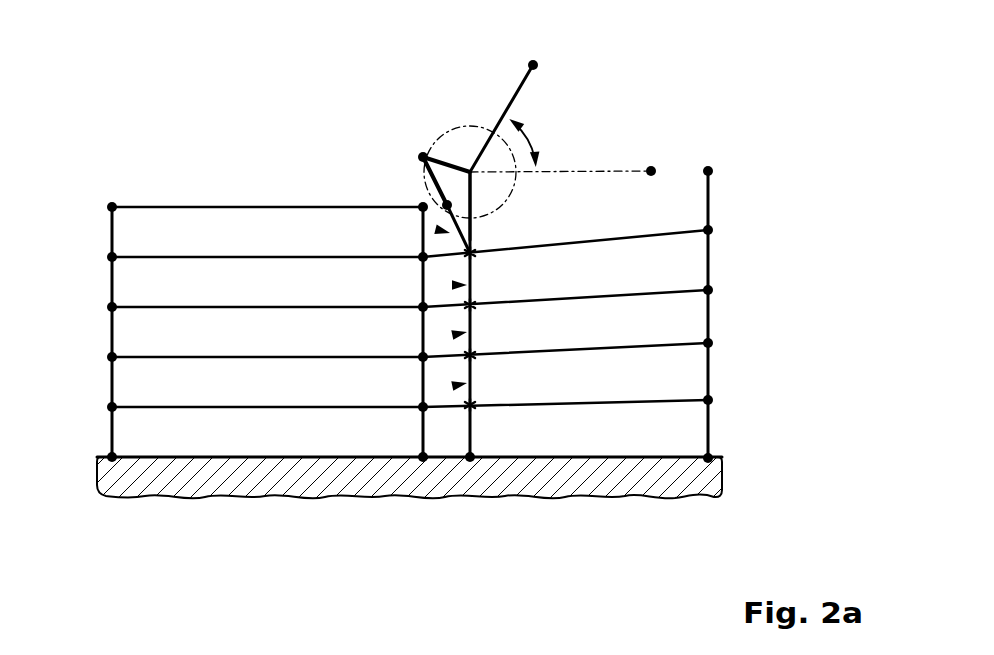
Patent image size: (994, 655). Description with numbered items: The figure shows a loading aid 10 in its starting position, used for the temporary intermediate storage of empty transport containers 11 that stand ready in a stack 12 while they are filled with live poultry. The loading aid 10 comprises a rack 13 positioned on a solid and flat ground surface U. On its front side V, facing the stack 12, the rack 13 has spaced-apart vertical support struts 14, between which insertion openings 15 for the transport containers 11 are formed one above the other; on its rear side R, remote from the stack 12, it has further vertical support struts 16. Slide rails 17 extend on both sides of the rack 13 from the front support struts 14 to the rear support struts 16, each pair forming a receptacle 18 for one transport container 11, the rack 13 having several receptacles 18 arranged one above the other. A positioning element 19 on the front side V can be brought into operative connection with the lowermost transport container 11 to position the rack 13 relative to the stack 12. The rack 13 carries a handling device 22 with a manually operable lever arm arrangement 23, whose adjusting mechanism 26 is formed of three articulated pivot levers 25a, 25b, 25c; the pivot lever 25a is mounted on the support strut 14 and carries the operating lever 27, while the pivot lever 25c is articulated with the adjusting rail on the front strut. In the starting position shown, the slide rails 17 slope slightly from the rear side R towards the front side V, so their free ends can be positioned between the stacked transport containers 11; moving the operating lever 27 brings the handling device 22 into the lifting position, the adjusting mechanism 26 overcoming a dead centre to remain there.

The loading aid 10 is at (450, 281).
The transport containers 11 is at (128, 290).
The stack 12 is at (230, 293).
The rack 13 is at (635, 314).
The vertical support struts 14 is at (473, 432).
The insertion openings 15 is at (452, 285).
The vertical support struts 16 is at (709, 427).
The slide rails 17 is at (668, 292).
The receptacle 18 is at (605, 227).
The positioning element 19 is at (450, 460).
The handling device 22 is at (470, 126).
The lever arm arrangement 23 is at (461, 134).
The pivot lever 25a is at (448, 163).
The pivot lever 25b is at (423, 157).
The pivot lever 25c is at (470, 228).
The adjusting mechanism 26 is at (422, 185).
The operating lever 27 is at (518, 92).
The front side V is at (403, 120).
The rear side R is at (727, 114).
The ground surface U is at (642, 478).